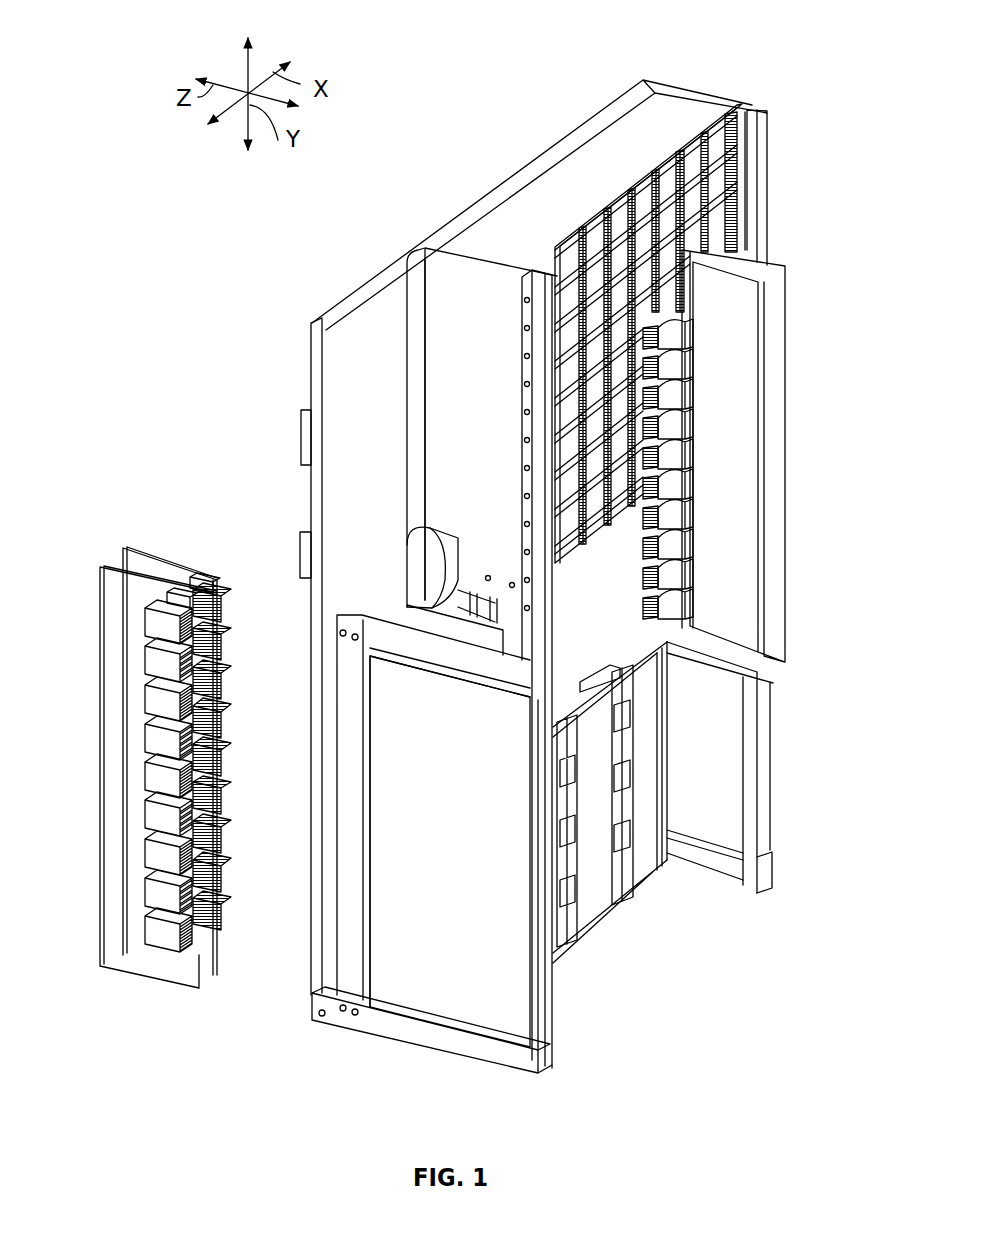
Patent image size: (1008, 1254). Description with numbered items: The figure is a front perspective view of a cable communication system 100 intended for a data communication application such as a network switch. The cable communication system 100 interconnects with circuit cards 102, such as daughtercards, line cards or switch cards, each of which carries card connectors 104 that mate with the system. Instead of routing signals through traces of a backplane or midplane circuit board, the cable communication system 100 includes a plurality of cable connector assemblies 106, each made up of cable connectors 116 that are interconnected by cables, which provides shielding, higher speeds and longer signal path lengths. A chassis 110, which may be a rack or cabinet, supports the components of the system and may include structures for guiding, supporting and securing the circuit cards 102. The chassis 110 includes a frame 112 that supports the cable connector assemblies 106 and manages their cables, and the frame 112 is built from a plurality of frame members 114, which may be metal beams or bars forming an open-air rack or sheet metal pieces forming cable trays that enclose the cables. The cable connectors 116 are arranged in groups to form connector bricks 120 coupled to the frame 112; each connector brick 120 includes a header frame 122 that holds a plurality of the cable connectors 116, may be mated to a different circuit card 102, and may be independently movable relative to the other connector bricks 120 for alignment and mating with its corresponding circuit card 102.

The cable communication system 100 is at (243, 216).
The circuit card 102 is at (790, 262).
The card connector 104 is at (672, 612).
The cable connector assembly 106 is at (733, 170).
The chassis 110 is at (342, 1028).
The frame 112 is at (350, 495).
The frame member 114 is at (688, 113).
The cable connector 116 is at (733, 210).
The connector brick 120 is at (600, 210).
The header frame 122 is at (635, 190).